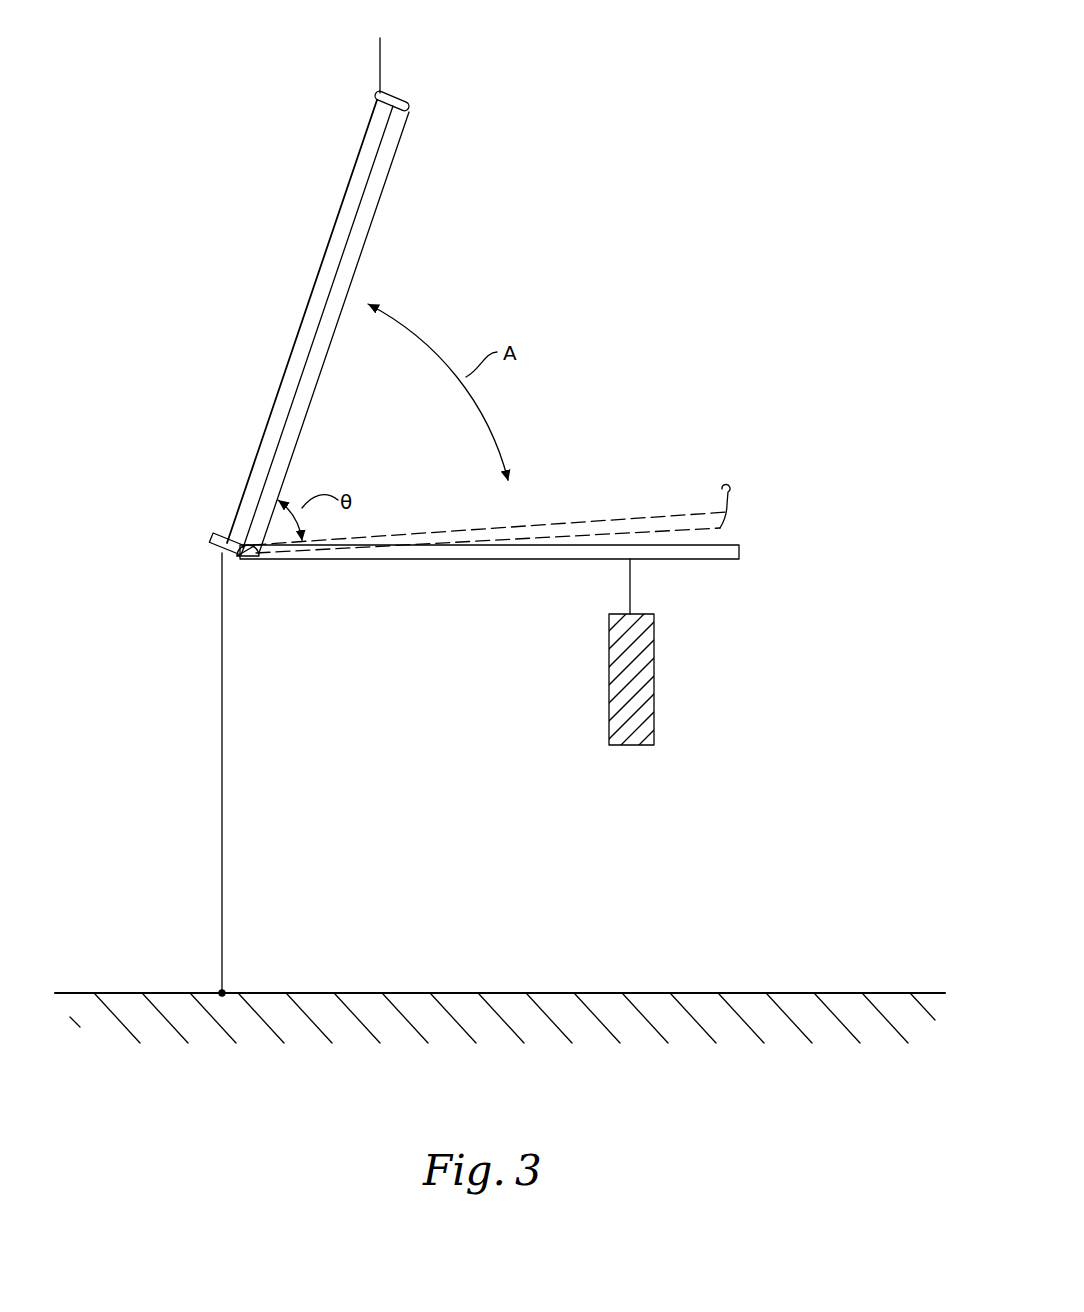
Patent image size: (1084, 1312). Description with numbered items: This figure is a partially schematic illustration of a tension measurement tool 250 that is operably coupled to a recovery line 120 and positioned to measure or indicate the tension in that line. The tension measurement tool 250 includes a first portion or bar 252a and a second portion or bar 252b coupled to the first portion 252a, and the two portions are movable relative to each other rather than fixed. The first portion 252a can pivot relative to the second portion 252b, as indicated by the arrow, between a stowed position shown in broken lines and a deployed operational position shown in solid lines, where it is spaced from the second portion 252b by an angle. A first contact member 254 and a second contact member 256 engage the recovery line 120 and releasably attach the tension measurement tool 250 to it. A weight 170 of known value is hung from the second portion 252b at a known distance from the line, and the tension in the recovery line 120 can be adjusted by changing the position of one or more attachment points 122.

The recovery line 120 is at (382, 66).
The attachment points 122 is at (222, 997).
The weight 170 is at (640, 746).
The tension measurement tool 250 is at (685, 178).
The first portion or bar 252a is at (390, 172).
The second portion or bar 252b is at (465, 560).
The first contact member 254 is at (413, 99).
The second contact member 256 is at (213, 553).